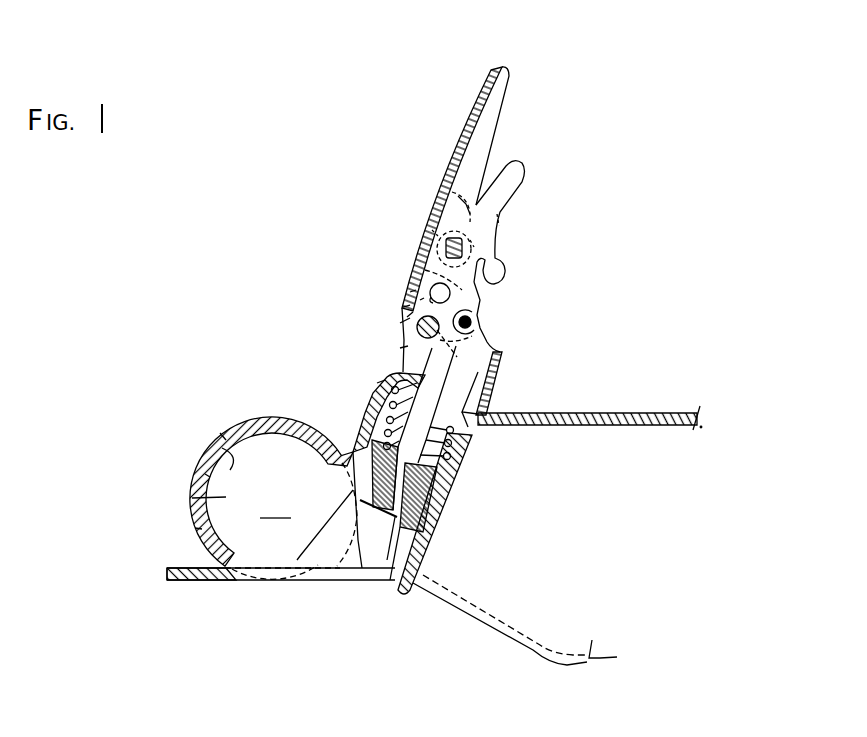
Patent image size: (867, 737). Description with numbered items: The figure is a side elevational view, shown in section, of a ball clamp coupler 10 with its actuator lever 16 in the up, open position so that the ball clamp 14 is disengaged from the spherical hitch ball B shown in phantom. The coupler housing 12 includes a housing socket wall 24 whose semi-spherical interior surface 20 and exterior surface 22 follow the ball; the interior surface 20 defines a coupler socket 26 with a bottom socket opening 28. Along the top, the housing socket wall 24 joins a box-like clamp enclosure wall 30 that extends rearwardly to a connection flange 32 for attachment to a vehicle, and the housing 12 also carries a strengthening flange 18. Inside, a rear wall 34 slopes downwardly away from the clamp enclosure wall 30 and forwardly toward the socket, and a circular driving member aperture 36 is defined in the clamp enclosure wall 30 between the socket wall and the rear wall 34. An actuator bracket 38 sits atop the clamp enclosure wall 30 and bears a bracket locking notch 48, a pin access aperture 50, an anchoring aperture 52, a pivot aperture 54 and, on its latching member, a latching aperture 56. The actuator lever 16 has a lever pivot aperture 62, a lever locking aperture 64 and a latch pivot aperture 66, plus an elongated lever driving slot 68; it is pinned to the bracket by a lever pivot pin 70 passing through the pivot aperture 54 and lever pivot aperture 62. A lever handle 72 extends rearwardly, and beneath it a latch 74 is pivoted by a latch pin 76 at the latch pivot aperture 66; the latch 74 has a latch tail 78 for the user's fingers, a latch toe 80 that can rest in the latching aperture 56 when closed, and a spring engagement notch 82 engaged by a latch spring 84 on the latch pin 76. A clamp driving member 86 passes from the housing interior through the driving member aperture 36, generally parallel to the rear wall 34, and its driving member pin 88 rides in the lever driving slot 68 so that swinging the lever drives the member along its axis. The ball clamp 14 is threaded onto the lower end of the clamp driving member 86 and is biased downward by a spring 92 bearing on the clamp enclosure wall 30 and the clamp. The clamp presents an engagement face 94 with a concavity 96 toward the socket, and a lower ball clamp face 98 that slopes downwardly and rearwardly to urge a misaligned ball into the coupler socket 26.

The ball clamp coupler 10 is at (236, 358).
The coupler housing 12 is at (195, 528).
The ball clamp 14 is at (387, 560).
The actuator lever 16 is at (467, 123).
The strengthening flange 18 is at (180, 585).
The interior surface 20 is at (207, 465).
The exterior surface 22 is at (220, 433).
The housing socket wall 24 is at (192, 498).
The coupler socket 26 is at (205, 474).
The bottom socket opening 28 is at (230, 580).
The clamp enclosure wall 30 is at (360, 415).
The connection flange 32 is at (670, 427).
The rear wall 34 is at (413, 557).
The driving member aperture 36 is at (470, 400).
The actuator bracket 38 is at (400, 323).
The bracket locking notch 48 is at (407, 317).
The pin access aperture 50 is at (500, 357).
The anchoring aperture 52 is at (487, 343).
The pivot aperture 54 is at (403, 327).
The latching aperture 56 is at (502, 374).
The lever pivot aperture 62 is at (400, 348).
The lever locking aperture 64 is at (410, 292).
The latch pivot aperture 66 is at (420, 300).
The lever driving slot 68 is at (403, 307).
The lever pivot pin 70 is at (403, 336).
The lever handle 72 is at (489, 78).
The latch 74 is at (500, 220).
The latch pin 76 is at (480, 243).
The latch tail 78 is at (517, 162).
The latch toe 80 is at (500, 277).
The spring engagement notch 82 is at (444, 176).
The latch spring 84 is at (432, 227).
The clamp driving member 86 is at (437, 510).
The driving member pin 88 is at (487, 322).
The spring 92 is at (377, 383).
The engagement face 94 is at (365, 421).
The concavity 96 is at (297, 560).
The lower ball clamp face 98 is at (347, 560).